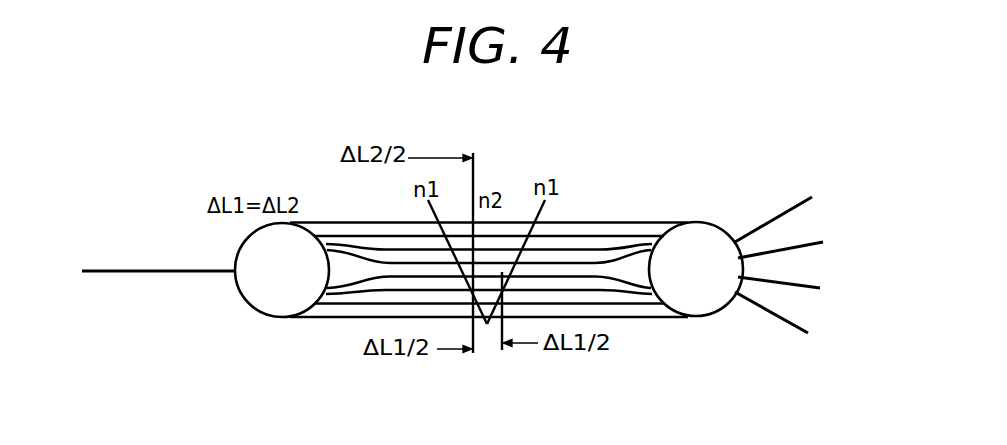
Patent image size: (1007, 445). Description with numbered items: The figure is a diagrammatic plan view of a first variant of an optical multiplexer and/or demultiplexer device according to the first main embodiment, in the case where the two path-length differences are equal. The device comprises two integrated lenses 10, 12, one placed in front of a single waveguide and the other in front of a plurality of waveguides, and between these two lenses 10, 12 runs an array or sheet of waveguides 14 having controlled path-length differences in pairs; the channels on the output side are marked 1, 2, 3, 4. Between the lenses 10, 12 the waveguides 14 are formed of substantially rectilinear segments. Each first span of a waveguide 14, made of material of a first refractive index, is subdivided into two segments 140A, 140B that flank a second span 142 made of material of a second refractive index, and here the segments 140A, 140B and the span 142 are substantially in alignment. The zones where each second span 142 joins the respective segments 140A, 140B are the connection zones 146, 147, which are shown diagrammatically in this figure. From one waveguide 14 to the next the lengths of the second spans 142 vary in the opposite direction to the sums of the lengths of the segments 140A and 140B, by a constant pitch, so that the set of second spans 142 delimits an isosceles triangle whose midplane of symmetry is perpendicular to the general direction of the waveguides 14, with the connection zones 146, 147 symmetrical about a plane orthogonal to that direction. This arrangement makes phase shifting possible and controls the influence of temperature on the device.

The integrated lens 10 is at (236, 306).
The integrated lens 12 is at (709, 317).
The waveguide 14 is at (487, 352).
The segment of first span 140A is at (325, 328).
The segment of first span 140B is at (650, 200).
The second span 142 is at (510, 222).
The connection zone 146 is at (428, 205).
The connection zone 147 is at (548, 205).
The output channel 1 is at (780, 211).
The output channel 2 is at (790, 244).
The output channel 3 is at (793, 291).
The output channel 4 is at (784, 323).